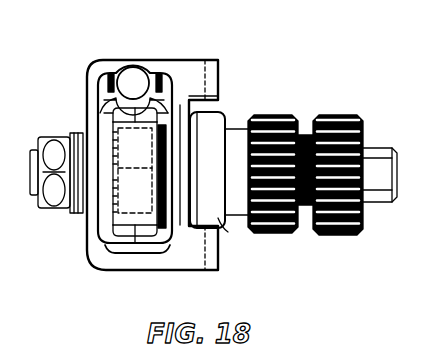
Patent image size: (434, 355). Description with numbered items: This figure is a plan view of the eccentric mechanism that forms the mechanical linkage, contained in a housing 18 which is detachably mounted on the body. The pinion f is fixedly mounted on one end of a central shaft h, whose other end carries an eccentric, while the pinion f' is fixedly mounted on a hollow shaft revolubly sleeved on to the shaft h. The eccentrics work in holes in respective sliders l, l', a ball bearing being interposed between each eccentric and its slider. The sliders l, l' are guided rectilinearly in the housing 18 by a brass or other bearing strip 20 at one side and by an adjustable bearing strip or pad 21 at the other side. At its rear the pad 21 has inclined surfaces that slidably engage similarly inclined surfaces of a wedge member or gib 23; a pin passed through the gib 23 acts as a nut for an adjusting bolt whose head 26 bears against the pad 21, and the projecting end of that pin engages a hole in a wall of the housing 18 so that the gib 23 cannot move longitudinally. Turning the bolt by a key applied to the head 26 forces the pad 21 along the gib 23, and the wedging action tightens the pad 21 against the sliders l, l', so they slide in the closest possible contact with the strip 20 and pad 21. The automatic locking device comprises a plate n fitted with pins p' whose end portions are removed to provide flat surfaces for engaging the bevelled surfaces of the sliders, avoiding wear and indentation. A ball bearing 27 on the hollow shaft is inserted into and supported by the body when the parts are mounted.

The housing 18 is at (95, 70).
The slider l is at (109, 158).
The bearing strip 20 is at (153, 255).
The wedge member or gib 23 is at (112, 77).
The head 26 is at (150, 78).
The plate n is at (132, 135).
The adjustable bearing strip or pad 21 is at (172, 92).
The slider l' is at (229, 150).
The pin p' is at (244, 172).
The pinion f' is at (286, 148).
The pinion f is at (342, 154).
The central shaft h is at (385, 195).
The ball bearing 27 is at (220, 222).